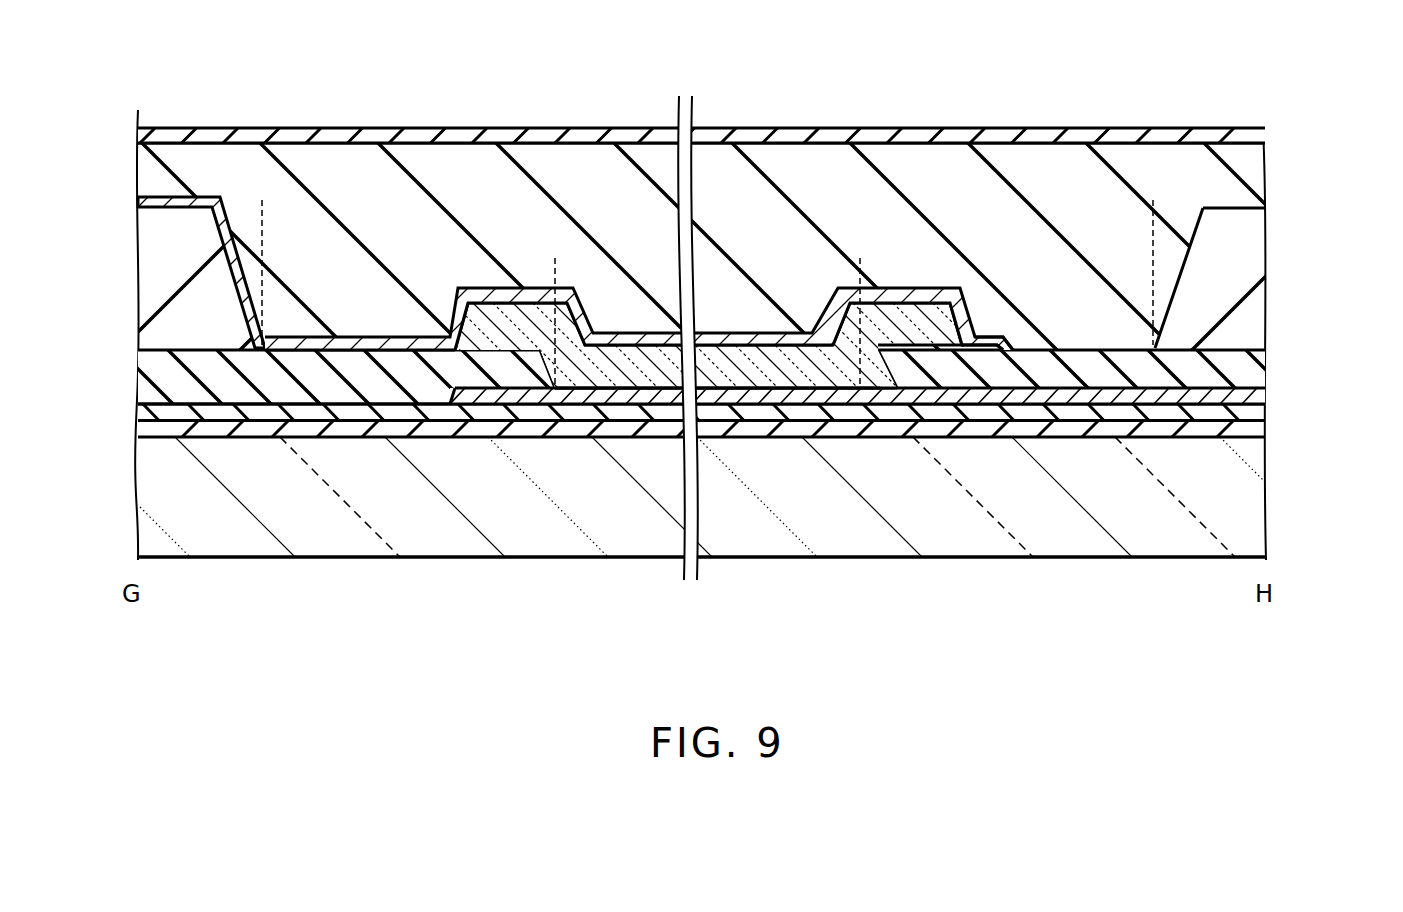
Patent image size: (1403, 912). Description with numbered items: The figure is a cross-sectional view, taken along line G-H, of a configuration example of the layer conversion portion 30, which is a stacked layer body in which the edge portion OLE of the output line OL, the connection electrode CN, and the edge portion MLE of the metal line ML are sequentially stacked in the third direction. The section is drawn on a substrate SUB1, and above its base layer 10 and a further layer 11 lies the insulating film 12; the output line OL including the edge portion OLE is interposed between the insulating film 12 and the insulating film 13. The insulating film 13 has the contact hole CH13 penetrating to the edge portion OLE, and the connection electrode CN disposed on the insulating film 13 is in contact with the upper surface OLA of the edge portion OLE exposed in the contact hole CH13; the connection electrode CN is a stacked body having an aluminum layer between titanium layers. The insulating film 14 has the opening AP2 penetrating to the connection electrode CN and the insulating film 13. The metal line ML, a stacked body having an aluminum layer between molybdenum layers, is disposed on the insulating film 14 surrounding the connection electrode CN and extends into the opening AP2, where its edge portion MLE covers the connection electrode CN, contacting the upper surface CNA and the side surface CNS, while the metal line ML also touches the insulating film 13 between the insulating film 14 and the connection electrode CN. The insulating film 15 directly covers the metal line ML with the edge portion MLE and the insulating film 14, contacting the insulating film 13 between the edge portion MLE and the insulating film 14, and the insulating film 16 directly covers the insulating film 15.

The layer conversion portion 30 is at (990, 91).
The substrate 10 is at (160, 502).
The undercoat insulating layer 11 is at (160, 436).
The insulating film 12 is at (160, 410).
The insulating film 13 is at (160, 377).
The insulating film 14 is at (160, 296).
The insulating film 15 is at (150, 168).
The insulating film 16 is at (152, 134).
The metal line ML is at (150, 203).
The edge portion of the metal line MLE is at (773, 336).
The output line OL is at (1255, 396).
The edge portion of the output line OLE is at (650, 390).
The upper surface of the edge portion OLA is at (822, 381).
The connection electrode CN is at (718, 380).
The upper surface of the connection electrode CNA is at (802, 331).
The side surface of the connection electrode CNS is at (965, 311).
The contact hole CH13 is at (555, 267).
The opening AP2 is at (262, 210).
The first substrate SUB1 is at (1278, 531).